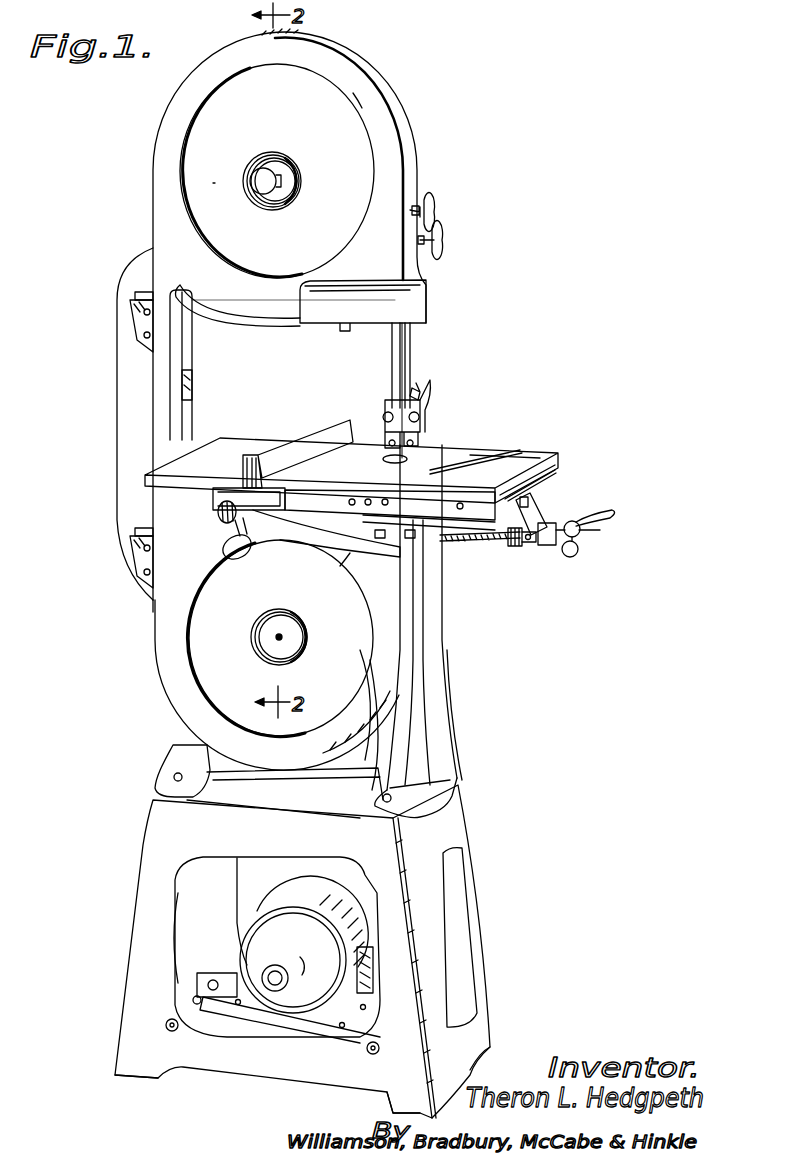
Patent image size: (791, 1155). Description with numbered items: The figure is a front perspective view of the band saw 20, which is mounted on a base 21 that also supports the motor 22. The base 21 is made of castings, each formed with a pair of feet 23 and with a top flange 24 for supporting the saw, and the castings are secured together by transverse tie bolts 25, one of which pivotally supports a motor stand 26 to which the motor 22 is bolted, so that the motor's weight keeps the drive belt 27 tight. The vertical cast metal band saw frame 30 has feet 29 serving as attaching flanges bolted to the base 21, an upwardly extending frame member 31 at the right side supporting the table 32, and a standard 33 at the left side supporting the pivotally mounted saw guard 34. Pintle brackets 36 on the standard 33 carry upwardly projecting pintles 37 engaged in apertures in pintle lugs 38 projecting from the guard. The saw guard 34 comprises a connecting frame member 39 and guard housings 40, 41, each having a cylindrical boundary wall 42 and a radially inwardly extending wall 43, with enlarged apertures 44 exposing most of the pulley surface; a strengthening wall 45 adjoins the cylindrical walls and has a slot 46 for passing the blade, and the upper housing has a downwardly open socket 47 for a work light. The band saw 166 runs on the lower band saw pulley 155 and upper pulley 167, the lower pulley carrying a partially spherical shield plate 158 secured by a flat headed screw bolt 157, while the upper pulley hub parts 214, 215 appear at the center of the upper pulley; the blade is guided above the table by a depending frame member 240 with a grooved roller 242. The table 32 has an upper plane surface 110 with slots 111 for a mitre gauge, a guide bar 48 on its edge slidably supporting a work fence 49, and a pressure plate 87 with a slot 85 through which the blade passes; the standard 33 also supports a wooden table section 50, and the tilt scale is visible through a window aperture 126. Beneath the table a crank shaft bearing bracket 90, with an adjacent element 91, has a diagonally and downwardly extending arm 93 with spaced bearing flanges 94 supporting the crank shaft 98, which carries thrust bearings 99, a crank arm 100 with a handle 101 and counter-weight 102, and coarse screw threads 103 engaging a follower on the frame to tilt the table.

The band saw 20 is at (293, 341).
The base 21 is at (437, 830).
The motor 22 is at (350, 917).
The feet 23 is at (120, 1067).
The top flange 24 is at (180, 807).
The transverse tie bolts 25 is at (193, 1000).
The motor stand 26 is at (230, 980).
The drive belt 27 is at (310, 867).
The feet 29 is at (423, 787).
The band saw frame 30 is at (437, 590).
The upwardly extending frame member 31 is at (437, 620).
The table 32 is at (452, 455).
The standard 33 is at (140, 433).
The saw guard 34 is at (170, 620).
The pintle brackets 36 is at (142, 325).
The pintles 37 is at (137, 292).
The pintle lugs 38 is at (140, 308).
The connecting frame member 39 is at (162, 392).
The guard housing 40 is at (172, 670).
The guard housing 41 is at (168, 144).
The cylindrical boundary wall 42 is at (340, 55).
The radially inwardly extending wall 43 is at (353, 93).
The enlarged apertures 44 is at (358, 136).
The wall 45 is at (337, 523).
The slot 46 is at (350, 553).
The socket 47 is at (378, 302).
The guide bar 48 is at (420, 507).
The work fence 49 is at (297, 457).
The wooden table section 50 is at (227, 455).
The slot 85 is at (390, 461).
The pressure plate 87 is at (400, 455).
The crank shaft bearing bracket 90 is at (543, 520).
The tilt pivot 91 is at (538, 498).
The arm 93 is at (527, 492).
The bearing flanges 94 is at (528, 541).
The crank shaft 98 is at (450, 547).
The thrust bearings 99 is at (513, 547).
The crank arm 100 is at (580, 526).
The handle 101 is at (611, 508).
The counter-weight 102 is at (577, 556).
The screw threads 103 is at (420, 557).
The upper plane surface 110 is at (500, 447).
The slots 111 is at (490, 447).
The window aperture 126 is at (192, 385).
The lower band saw pulley 155 is at (220, 680).
The flat headed screw bolt 157 is at (282, 637).
The shield plate 158 is at (267, 620).
The band saw 166 is at (393, 447).
The upper pulley 167 is at (198, 192).
The upper wheel shaft 214 is at (262, 180).
The upper wheel hub 215 is at (303, 175).
The depending frame member 240 is at (415, 350).
The grooved roller 242 is at (427, 387).